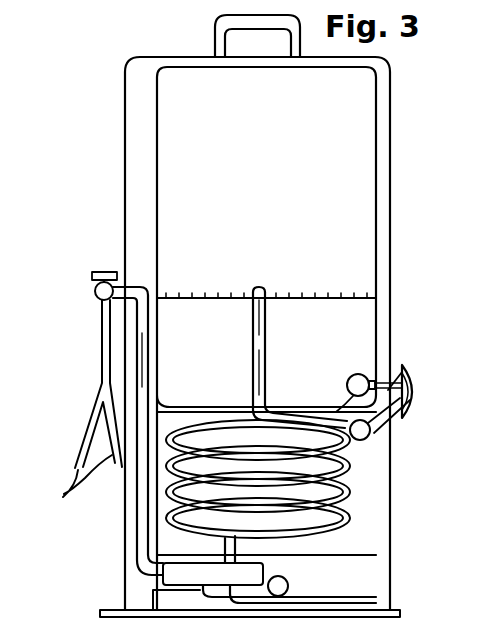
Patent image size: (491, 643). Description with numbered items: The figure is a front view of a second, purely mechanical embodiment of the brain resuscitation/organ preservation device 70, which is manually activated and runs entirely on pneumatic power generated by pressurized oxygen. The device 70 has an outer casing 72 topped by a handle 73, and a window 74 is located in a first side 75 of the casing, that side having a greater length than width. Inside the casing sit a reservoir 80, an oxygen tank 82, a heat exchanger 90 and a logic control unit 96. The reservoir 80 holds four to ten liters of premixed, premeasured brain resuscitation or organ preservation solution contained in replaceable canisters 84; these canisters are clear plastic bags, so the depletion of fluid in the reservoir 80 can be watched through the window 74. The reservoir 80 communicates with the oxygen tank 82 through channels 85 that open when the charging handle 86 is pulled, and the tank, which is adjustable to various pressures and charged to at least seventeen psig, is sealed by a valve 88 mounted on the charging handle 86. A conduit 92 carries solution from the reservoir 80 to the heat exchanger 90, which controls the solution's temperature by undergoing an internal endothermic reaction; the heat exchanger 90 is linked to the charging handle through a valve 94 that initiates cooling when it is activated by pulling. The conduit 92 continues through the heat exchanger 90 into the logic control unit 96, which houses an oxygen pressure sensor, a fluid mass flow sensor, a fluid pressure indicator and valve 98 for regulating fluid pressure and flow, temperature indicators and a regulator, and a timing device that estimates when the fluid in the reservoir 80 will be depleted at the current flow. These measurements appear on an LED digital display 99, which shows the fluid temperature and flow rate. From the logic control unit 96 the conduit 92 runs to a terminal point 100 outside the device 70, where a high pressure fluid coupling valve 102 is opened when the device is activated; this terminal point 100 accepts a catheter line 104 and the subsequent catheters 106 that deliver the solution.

The brain resuscitation/organ preservation device 70 is at (398, 86).
The outer casing 72 is at (125, 85).
The handle 73 is at (215, 36).
The window 74 is at (157, 176).
The first side 75 is at (156, 153).
The reservoir 80 is at (384, 120).
The oxygen tank 82 is at (376, 304).
The replaceable canisters 84 is at (357, 296).
The channels 85 is at (320, 296).
The charging handle 86 is at (420, 395).
The valve 88 is at (358, 374).
The heat exchanger 90 is at (376, 482).
The conduit 92 is at (265, 347).
The valve 94 is at (376, 452).
The logic control unit 96 is at (378, 585).
The fluid pressure indicator and valve 98 is at (293, 583).
The LED digital display 99 is at (153, 589).
The terminal point 100 is at (110, 300).
The high pressure fluid coupling valve 102 is at (95, 291).
The catheter line 104 is at (100, 366).
The catheters 106 is at (64, 491).